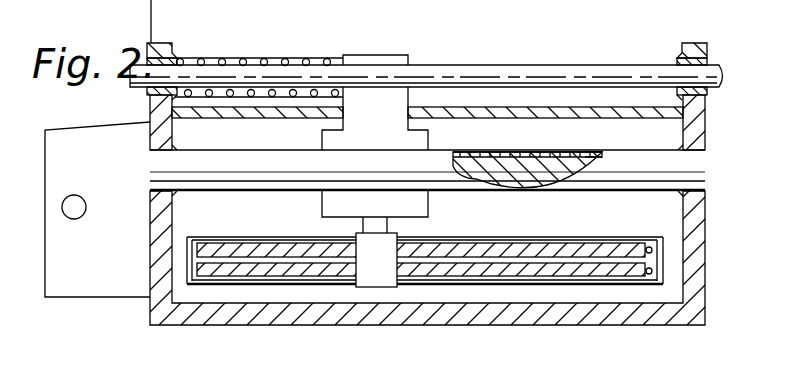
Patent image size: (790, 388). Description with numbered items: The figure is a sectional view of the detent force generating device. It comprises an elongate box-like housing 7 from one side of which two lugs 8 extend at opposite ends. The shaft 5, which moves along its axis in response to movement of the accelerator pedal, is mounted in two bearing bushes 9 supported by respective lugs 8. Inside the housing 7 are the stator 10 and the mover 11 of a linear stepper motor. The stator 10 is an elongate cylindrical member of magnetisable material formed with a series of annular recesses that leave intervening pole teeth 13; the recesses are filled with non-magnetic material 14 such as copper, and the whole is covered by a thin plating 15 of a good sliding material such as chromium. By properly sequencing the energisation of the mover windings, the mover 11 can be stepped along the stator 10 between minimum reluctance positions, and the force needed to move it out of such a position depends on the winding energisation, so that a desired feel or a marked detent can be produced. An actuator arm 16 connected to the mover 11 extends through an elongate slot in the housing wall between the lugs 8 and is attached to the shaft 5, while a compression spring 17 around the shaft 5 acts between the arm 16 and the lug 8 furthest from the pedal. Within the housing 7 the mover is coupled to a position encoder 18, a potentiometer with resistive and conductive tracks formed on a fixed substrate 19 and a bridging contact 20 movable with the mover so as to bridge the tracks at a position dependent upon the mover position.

The shaft 5 is at (572, 38).
The housing 7 is at (664, 326).
The lugs 8 is at (147, 44).
The bearing bushes 9 is at (174, 59).
The stator 10 is at (160, 165).
The mover 11 is at (322, 204).
The pole teeth 13 is at (559, 152).
The non-magnetic material 14 is at (496, 152).
The thin plating 15 is at (608, 137).
The actuator arm 16 is at (360, 98).
The compression spring 17 is at (262, 62).
The position encoder 18 is at (425, 240).
The fixed substrate 19 is at (466, 214).
The bridging contact 20 is at (375, 280).